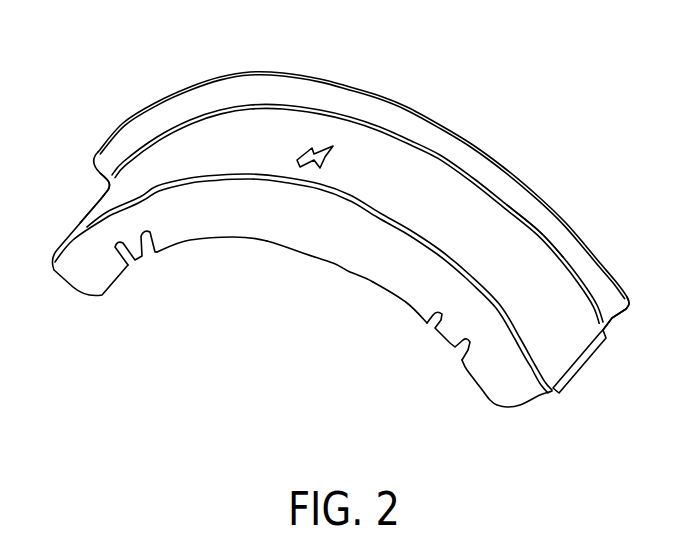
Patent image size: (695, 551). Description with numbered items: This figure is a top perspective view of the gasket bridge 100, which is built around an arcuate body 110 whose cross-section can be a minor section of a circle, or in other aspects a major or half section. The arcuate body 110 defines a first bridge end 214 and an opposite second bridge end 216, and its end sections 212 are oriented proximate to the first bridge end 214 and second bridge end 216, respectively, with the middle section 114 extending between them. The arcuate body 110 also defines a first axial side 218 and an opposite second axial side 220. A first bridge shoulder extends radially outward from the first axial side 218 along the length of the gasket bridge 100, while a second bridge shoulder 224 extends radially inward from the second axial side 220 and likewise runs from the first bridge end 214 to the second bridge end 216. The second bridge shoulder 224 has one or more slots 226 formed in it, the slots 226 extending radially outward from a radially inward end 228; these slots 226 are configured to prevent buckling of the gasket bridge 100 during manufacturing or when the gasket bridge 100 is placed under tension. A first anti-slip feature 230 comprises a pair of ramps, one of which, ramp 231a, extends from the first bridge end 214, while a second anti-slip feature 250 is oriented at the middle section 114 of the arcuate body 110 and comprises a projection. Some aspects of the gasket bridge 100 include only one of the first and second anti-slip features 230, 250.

The gasket bridge 100 is at (588, 118).
The arcuate body 110 is at (230, 143).
The middle section 114 is at (437, 190).
The end sections 212 is at (133, 180).
The first bridge end 214 is at (613, 302).
The second bridge end 216 is at (102, 202).
The first axial side 218 is at (537, 217).
The second axial side 220 is at (327, 215).
The second bridge shoulder 224 is at (237, 223).
The slots 226 is at (432, 328).
The radially inward end 228 is at (377, 287).
The first anti-slip feature 230 is at (576, 406).
The ramp 231a is at (593, 347).
The second anti-slip feature 250 is at (316, 129).